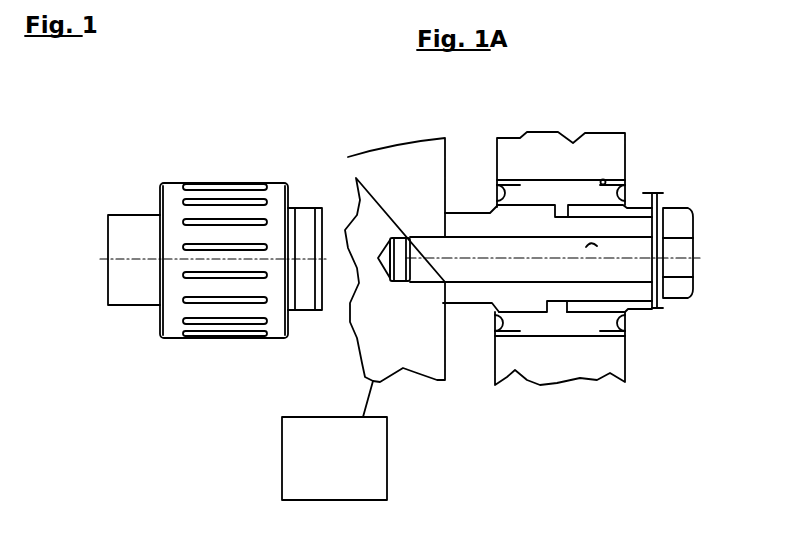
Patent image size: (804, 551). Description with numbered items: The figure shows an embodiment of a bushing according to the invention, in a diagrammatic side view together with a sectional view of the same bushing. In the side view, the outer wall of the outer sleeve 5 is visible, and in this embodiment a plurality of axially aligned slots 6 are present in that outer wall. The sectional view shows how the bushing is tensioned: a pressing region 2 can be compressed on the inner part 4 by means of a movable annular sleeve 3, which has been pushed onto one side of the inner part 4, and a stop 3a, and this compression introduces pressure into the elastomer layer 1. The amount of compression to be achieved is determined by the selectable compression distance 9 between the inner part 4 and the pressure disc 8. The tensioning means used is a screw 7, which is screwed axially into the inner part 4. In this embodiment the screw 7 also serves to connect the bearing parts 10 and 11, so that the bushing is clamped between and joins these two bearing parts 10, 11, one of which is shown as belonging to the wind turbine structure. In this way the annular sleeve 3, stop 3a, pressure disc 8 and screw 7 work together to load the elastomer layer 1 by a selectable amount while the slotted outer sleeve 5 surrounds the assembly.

In FIG. 1A, the elastomer layer 1 is at (562, 193).
In FIG. 1A, the pressing region 2 is at (563, 207).
In FIG. 1A, the movable annular sleeve 3 is at (640, 302).
In FIG. 1A, the stop 3a is at (548, 312).
In FIG. 1A, the inner part 4 is at (499, 221).
In FIG. 1, the outer sleeve 5 is at (280, 187).
In FIG. 1A, the outer sleeve 5 is at (607, 181).
In FIG. 1, the slots 6 is at (233, 200).
In FIG. 1A, the screw 7 is at (682, 228).
In FIG. 1A, the pressure disc 8 is at (660, 300).
In FIG. 1A, the compression distance 9 is at (653, 188).
In FIG. 1A, the bearing part 10 is at (613, 155).
In FIG. 1A, the bearing part 11 is at (418, 166).